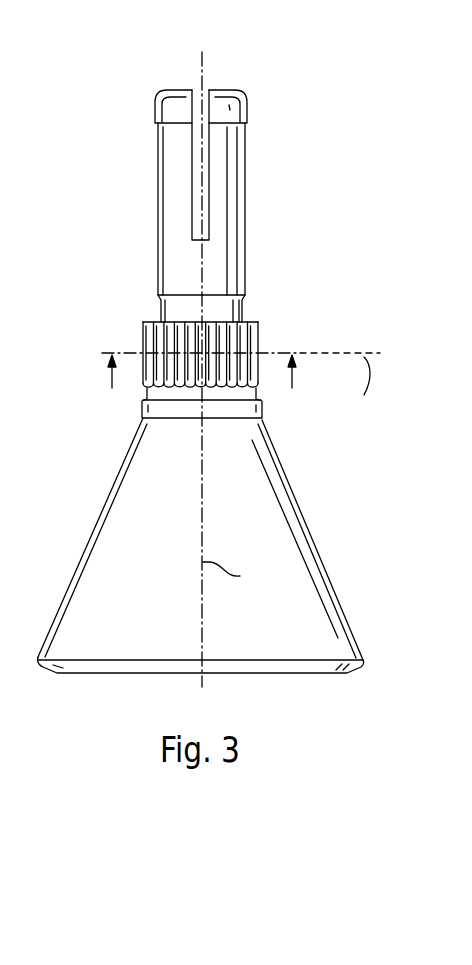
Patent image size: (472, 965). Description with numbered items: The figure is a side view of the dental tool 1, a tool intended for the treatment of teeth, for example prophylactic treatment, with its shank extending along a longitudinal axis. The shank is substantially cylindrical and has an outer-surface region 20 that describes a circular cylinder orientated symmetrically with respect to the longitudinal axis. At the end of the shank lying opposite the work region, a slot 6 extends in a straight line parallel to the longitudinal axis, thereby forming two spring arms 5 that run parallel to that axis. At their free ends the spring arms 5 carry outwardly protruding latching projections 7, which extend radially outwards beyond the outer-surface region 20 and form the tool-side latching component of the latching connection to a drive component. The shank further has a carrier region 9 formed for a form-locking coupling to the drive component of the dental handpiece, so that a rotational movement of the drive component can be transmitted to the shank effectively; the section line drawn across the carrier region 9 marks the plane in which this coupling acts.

The dental tool 1 is at (209, 357).
The spring arms 5 is at (165, 162).
The slot 6 is at (197, 192).
The latching projections 7 is at (247, 112).
The carrier region 9 is at (258, 333).
The outer-surface region 20 is at (170, 206).